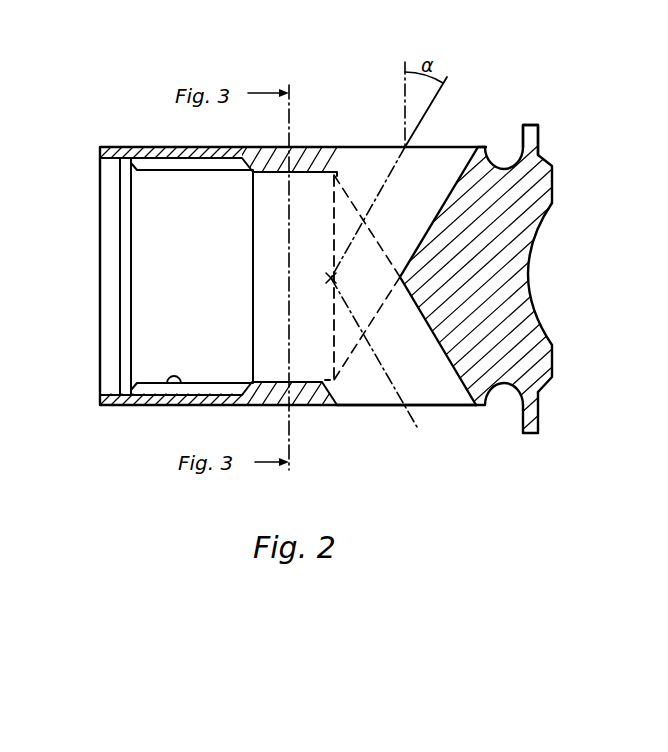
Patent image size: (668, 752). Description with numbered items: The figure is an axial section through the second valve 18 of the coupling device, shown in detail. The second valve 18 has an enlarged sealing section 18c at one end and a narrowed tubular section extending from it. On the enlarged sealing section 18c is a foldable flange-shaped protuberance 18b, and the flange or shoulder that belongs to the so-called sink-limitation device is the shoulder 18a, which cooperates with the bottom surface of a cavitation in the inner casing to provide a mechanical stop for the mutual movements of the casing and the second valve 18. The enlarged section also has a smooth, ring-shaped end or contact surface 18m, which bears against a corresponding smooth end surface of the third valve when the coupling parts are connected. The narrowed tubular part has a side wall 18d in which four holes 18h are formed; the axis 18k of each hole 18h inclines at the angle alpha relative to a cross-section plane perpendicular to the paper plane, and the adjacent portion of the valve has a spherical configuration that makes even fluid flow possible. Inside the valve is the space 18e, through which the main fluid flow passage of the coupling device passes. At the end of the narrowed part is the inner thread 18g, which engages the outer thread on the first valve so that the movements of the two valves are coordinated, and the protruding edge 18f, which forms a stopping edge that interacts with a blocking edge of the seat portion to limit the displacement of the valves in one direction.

The second valve 18 is at (507, 490).
The shoulder 18a is at (488, 407).
The foldable flange-shaped protuberance 18b is at (539, 434).
The enlarged sealing section 18c is at (545, 212).
The side wall 18d is at (327, 406).
The space 18e is at (192, 276).
The protruding edge 18f is at (100, 406).
The inner thread 18g is at (163, 398).
The holes 18h is at (432, 406).
The axis 18k is at (389, 394).
The contact surface 18m is at (555, 378).